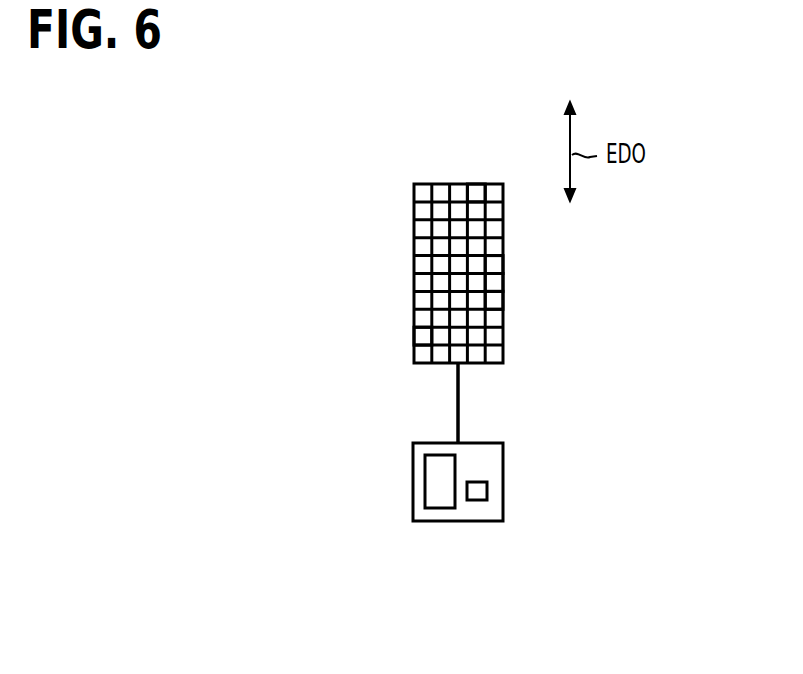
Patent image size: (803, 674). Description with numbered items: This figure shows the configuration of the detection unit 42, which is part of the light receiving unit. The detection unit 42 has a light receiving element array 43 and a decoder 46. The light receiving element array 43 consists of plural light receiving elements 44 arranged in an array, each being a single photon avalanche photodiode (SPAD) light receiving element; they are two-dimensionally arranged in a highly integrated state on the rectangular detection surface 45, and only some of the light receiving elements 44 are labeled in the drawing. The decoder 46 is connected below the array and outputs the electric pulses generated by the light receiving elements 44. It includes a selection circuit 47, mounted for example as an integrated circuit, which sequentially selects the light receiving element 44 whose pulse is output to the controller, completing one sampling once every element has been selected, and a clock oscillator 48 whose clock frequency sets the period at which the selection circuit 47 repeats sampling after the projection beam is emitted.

The detection unit 42 is at (341, 362).
The light receiving element array 43 is at (412, 356).
The light receiving element 44 is at (476, 183).
The detection surface 45 is at (420, 185).
The decoder 46 is at (413, 470).
The selection circuit 47 is at (438, 509).
The clock oscillator 48 is at (475, 501).